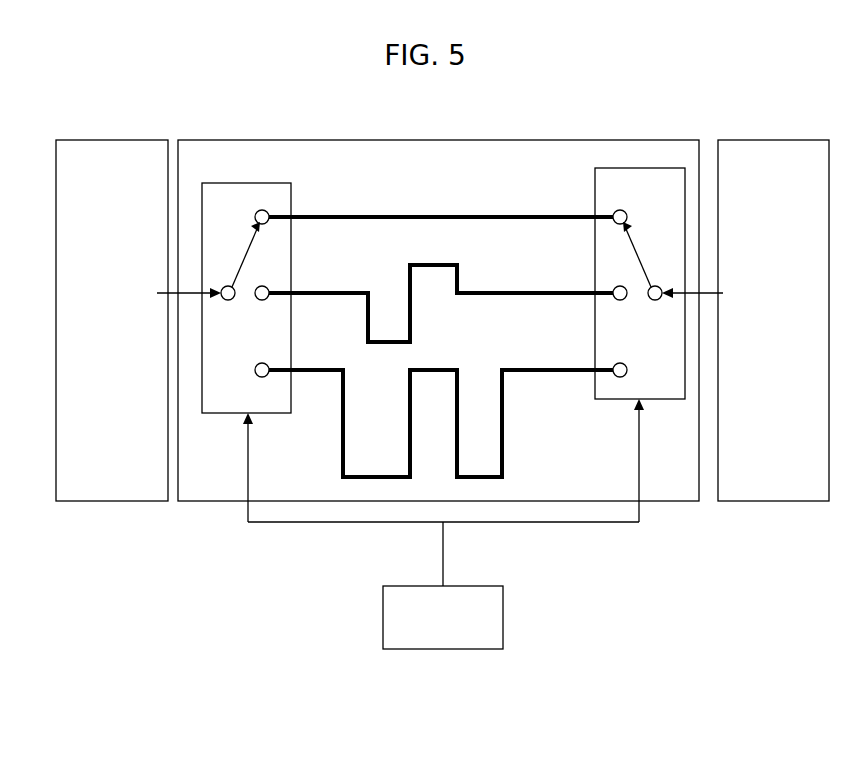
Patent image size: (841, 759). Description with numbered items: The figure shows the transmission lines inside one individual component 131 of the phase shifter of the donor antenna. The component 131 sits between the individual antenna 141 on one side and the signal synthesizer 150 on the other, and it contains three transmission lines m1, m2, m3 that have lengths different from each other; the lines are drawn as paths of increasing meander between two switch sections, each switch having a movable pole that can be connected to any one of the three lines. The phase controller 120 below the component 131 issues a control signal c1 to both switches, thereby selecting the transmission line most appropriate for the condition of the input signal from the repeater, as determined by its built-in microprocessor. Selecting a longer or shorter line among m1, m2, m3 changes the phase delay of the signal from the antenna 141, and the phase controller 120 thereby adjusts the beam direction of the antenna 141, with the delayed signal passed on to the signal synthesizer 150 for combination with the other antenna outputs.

The individual component of the phase shifter 131 is at (480, 140).
The individual antenna 141 is at (138, 320).
The signal synthesizer 150 is at (745, 320).
The phase controller 120 is at (443, 524).
The transmission line m1 is at (441, 204).
The transmission line m2 is at (441, 303).
The transmission line m3 is at (441, 410).
The control signal c1 is at (443, 492).